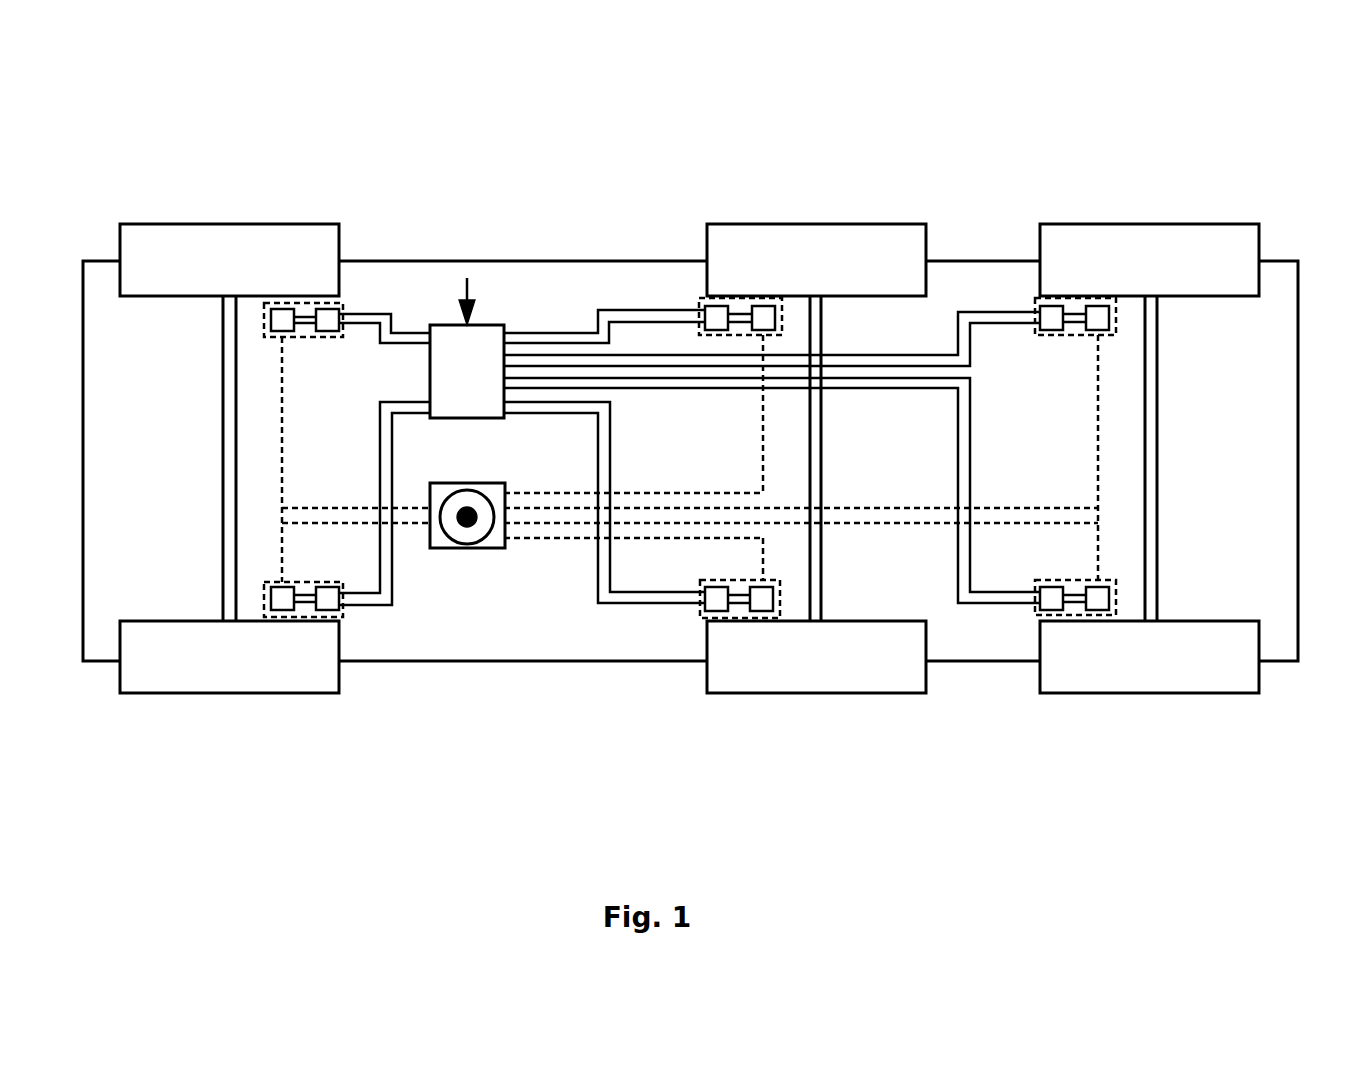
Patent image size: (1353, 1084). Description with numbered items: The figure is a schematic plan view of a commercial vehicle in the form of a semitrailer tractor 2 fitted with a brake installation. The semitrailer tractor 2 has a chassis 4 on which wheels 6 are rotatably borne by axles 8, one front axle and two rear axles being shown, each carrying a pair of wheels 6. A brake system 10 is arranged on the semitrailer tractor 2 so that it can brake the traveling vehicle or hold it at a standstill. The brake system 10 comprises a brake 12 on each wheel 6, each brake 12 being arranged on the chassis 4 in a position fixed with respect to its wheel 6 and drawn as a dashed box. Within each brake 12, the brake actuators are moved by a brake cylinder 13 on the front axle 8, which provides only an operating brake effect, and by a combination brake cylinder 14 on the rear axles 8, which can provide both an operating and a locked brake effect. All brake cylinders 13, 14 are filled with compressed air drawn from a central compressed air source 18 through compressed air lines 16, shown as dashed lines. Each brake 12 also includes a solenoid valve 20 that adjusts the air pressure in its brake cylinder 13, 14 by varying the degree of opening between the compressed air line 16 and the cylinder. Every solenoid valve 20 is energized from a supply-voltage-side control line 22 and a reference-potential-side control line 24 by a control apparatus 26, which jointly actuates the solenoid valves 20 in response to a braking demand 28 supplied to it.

The semitrailer tractor 2 is at (1254, 145).
The chassis 4 is at (518, 662).
The wheel 6 is at (229, 224).
The axle 8 is at (222, 443).
The brake system 10 is at (550, 585).
The brake 12 is at (687, 460).
The brake cylinder 13 is at (276, 335).
The combination brake cylinder 14 is at (768, 335).
The compressed air line 16 is at (292, 523).
The compressed air source 18 is at (467, 548).
The solenoid valve 20 is at (336, 335).
The supply-voltage-side control line 22 is at (402, 333).
The reference-potential-side control line 24 is at (366, 324).
The control apparatus 26 is at (470, 418).
The braking demand 28 is at (468, 293).